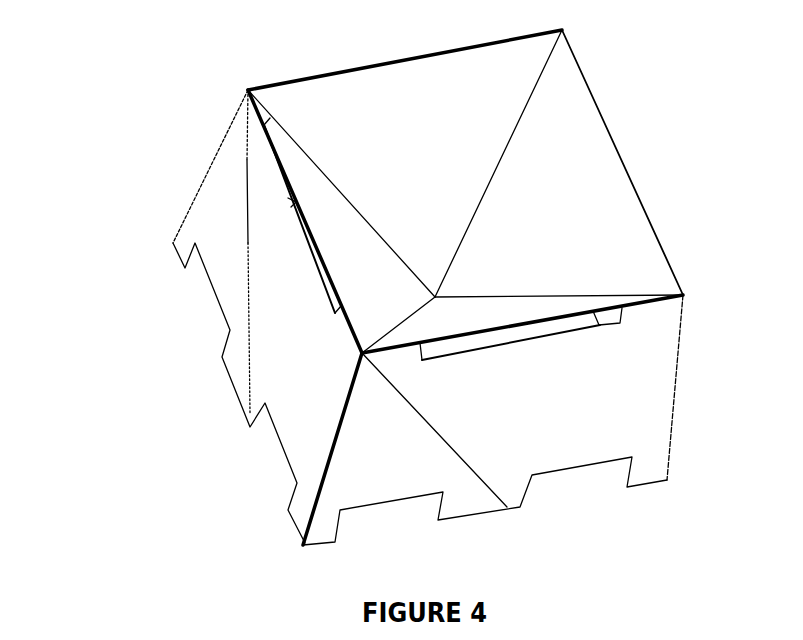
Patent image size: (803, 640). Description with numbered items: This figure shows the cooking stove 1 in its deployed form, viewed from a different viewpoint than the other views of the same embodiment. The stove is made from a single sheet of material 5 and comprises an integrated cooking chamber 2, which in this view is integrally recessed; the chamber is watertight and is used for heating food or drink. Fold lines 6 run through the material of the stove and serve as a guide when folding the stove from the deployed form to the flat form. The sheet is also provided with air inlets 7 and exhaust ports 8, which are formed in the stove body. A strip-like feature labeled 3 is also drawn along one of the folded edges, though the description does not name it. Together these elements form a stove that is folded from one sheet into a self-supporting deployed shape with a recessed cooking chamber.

The cooking stove 1 is at (115, 127).
The integrated cooking chamber 2 is at (612, 156).
The fastening strip 3 is at (312, 247).
The single sheet of material 5 is at (663, 386).
The fold lines 6 is at (545, 67).
The air inlets 7 is at (420, 394).
The exhaust ports 8 is at (548, 328).